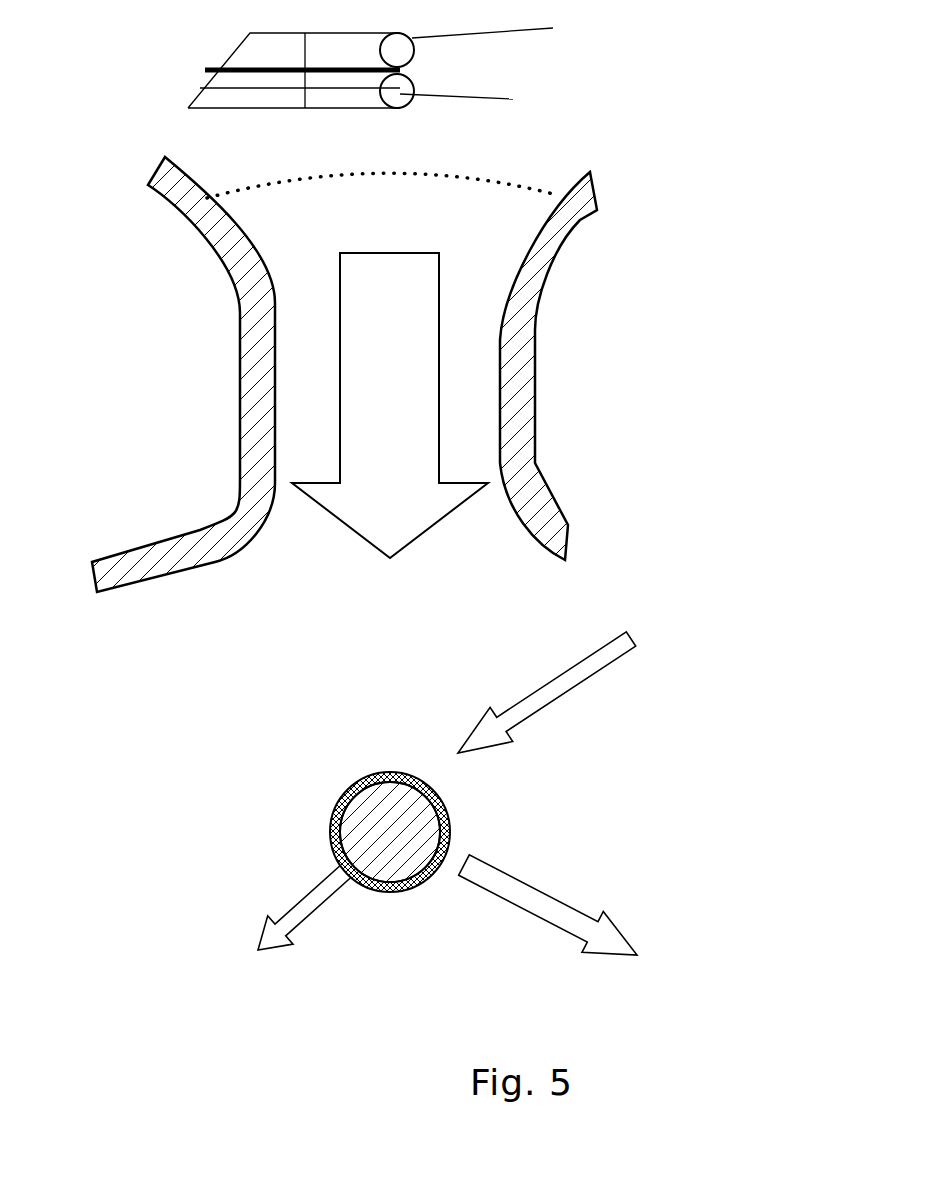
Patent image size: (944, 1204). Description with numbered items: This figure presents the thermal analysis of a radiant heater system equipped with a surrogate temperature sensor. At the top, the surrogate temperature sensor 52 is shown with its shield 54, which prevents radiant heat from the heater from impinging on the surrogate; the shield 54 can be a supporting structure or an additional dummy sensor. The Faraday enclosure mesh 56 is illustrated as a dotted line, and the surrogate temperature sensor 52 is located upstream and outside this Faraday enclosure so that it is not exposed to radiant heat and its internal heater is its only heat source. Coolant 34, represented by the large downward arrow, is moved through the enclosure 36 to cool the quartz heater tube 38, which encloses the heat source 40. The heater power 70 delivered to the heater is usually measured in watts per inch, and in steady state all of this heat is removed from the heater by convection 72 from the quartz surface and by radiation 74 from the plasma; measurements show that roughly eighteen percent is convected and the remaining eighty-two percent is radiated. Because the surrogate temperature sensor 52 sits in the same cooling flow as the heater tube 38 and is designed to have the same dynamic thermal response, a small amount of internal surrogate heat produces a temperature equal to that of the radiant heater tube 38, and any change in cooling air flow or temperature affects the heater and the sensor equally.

The coolant 34 is at (390, 405).
The enclosure 36 is at (543, 508).
The quartz heater tube 38 is at (327, 833).
The heat source 40 is at (393, 815).
The surrogate temperature sensor 52 is at (352, 45).
The shield 54 is at (400, 94).
The Faraday enclosure mesh 56 is at (440, 169).
The heater power 70 is at (630, 692).
The convection 72 is at (256, 966).
The radiation 74 is at (593, 952).